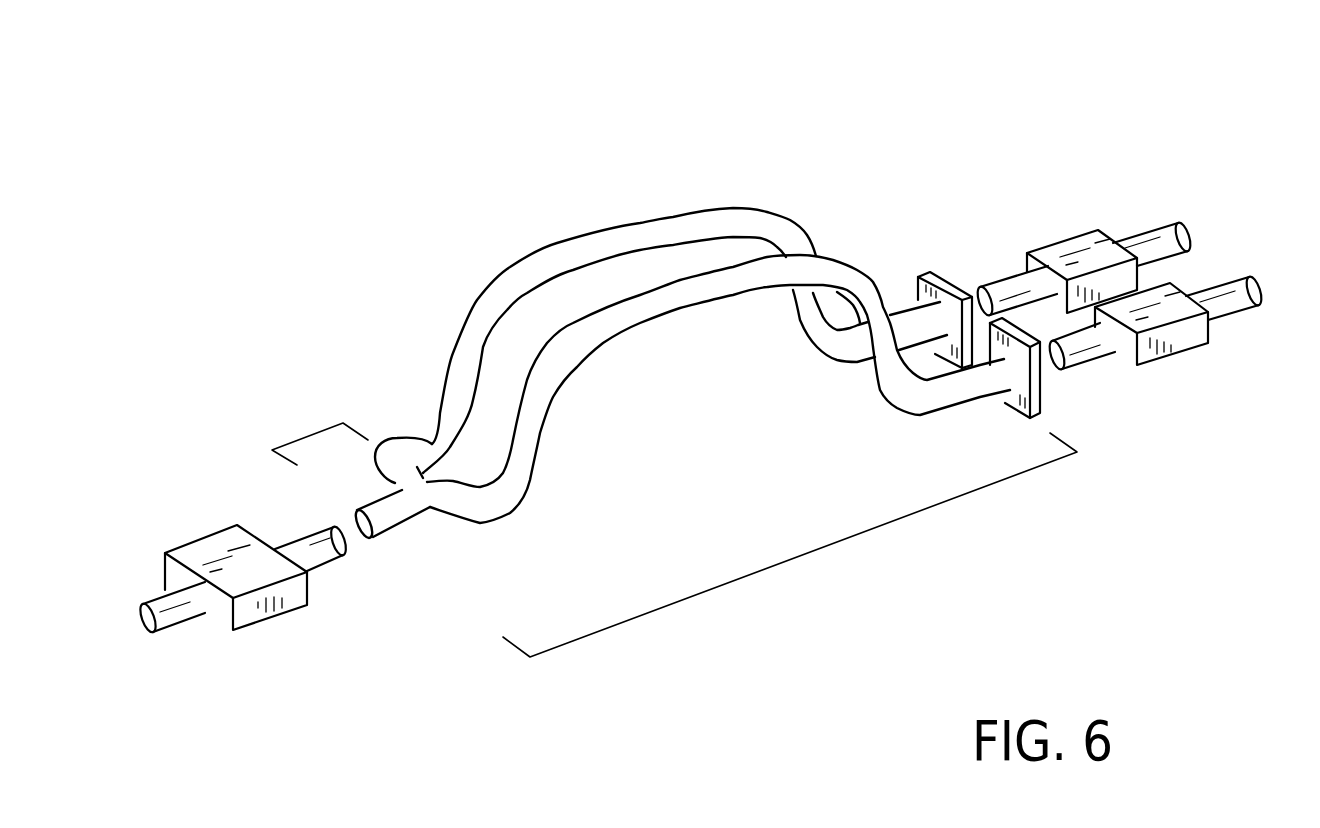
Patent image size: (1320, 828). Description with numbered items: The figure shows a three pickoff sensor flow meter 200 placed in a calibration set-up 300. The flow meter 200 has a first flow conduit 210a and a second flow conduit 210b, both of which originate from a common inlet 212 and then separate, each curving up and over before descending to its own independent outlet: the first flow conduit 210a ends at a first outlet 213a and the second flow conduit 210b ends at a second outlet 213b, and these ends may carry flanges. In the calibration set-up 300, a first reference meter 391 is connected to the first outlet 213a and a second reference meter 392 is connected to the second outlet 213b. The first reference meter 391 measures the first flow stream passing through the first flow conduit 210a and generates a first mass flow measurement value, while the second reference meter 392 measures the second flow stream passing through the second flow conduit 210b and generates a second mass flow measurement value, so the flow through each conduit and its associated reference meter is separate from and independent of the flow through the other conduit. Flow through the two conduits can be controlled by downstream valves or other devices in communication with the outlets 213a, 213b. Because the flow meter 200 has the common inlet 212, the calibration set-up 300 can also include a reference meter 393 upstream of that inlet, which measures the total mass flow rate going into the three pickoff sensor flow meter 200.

The calibration set-up 300 is at (302, 234).
The three pickoff sensor flow meter 200 is at (793, 558).
The common inlet 212 is at (302, 438).
The first flow conduit 210a is at (623, 333).
The second flow conduit 210b is at (558, 243).
The first outlet 213a is at (1040, 385).
The second outlet 213b is at (938, 280).
The first reference meter 391 is at (1070, 237).
The second reference meter 392 is at (1193, 347).
The reference meter 393 is at (263, 620).